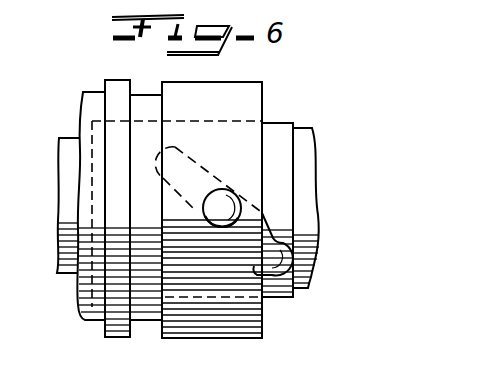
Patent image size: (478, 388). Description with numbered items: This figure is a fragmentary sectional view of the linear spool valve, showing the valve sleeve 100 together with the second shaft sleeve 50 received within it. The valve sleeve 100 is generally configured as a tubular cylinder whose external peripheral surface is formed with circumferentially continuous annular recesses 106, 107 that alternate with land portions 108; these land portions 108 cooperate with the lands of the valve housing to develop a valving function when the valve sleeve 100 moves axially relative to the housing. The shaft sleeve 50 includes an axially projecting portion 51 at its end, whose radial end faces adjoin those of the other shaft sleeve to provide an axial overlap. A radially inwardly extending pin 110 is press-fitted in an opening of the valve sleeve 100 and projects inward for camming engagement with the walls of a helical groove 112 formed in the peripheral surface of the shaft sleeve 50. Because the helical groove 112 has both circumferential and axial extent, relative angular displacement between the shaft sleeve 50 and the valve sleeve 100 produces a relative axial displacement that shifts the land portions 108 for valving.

The second shaft sleeve 50 is at (283, 153).
The axially projecting portion 51 is at (65, 152).
The valve sleeve 100 is at (240, 105).
The annular recess 106 is at (86, 105).
The annular recess 107 is at (146, 104).
The land portion 108 is at (117, 88).
The pin 110 is at (222, 202).
The helical groove 112 is at (303, 243).